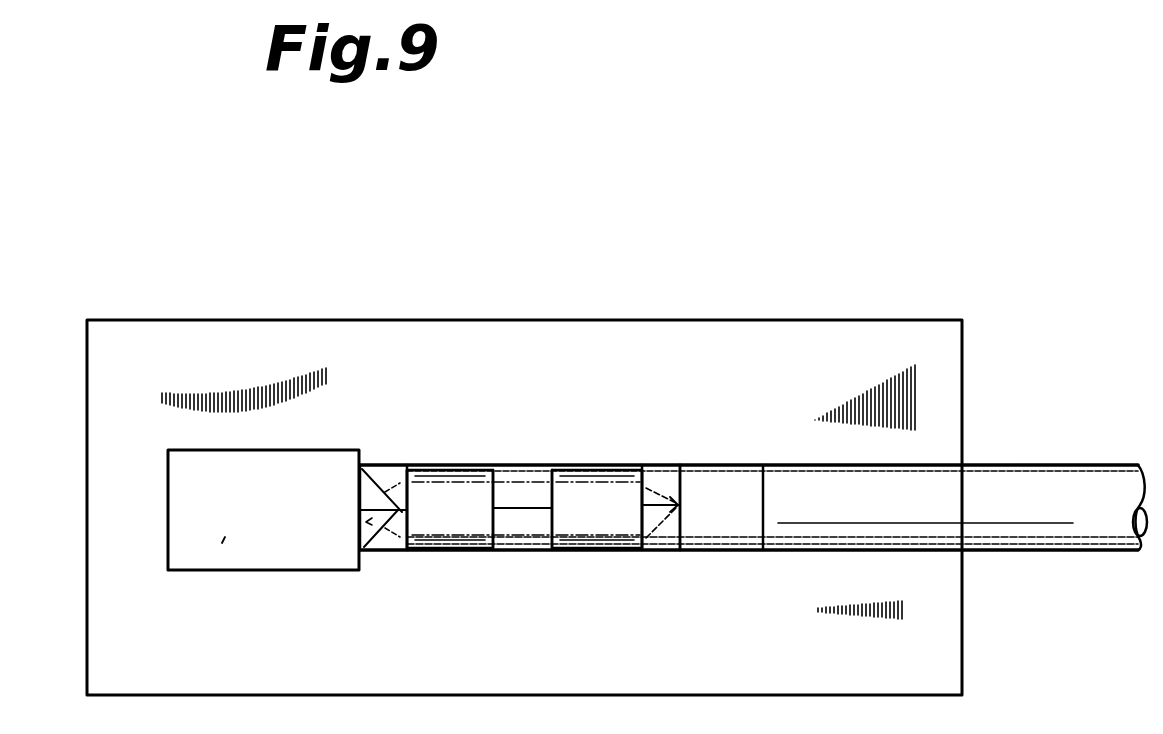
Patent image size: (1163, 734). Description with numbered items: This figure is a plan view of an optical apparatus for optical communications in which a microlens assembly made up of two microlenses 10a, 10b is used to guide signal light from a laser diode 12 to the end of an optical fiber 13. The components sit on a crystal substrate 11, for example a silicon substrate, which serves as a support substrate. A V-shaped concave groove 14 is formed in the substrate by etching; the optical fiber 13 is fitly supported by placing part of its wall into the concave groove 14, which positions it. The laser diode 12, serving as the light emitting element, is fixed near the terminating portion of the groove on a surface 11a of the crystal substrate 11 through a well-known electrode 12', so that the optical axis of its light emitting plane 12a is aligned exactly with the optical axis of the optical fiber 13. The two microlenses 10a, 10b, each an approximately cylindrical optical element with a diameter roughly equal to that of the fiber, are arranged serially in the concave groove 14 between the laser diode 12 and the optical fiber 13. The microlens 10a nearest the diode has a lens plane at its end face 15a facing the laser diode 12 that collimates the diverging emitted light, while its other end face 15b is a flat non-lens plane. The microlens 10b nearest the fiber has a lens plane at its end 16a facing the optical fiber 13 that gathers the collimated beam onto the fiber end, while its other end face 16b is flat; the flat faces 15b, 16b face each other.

The microlens 10a is at (446, 508).
The microlens 10b is at (600, 500).
The crystal substrate 11 is at (964, 647).
The surface 11a is at (205, 365).
The laser diode 12 is at (263, 565).
The electrode 12' is at (175, 601).
The light emitting plane 12a is at (365, 553).
The optical fiber 13 is at (1044, 488).
The V-shaped concave groove 14 is at (665, 551).
The end face of microlens 15a is at (416, 523).
The end face of microlens 15b is at (500, 525).
The end face of microlens 16a is at (643, 488).
The end face of microlens 16b is at (548, 496).